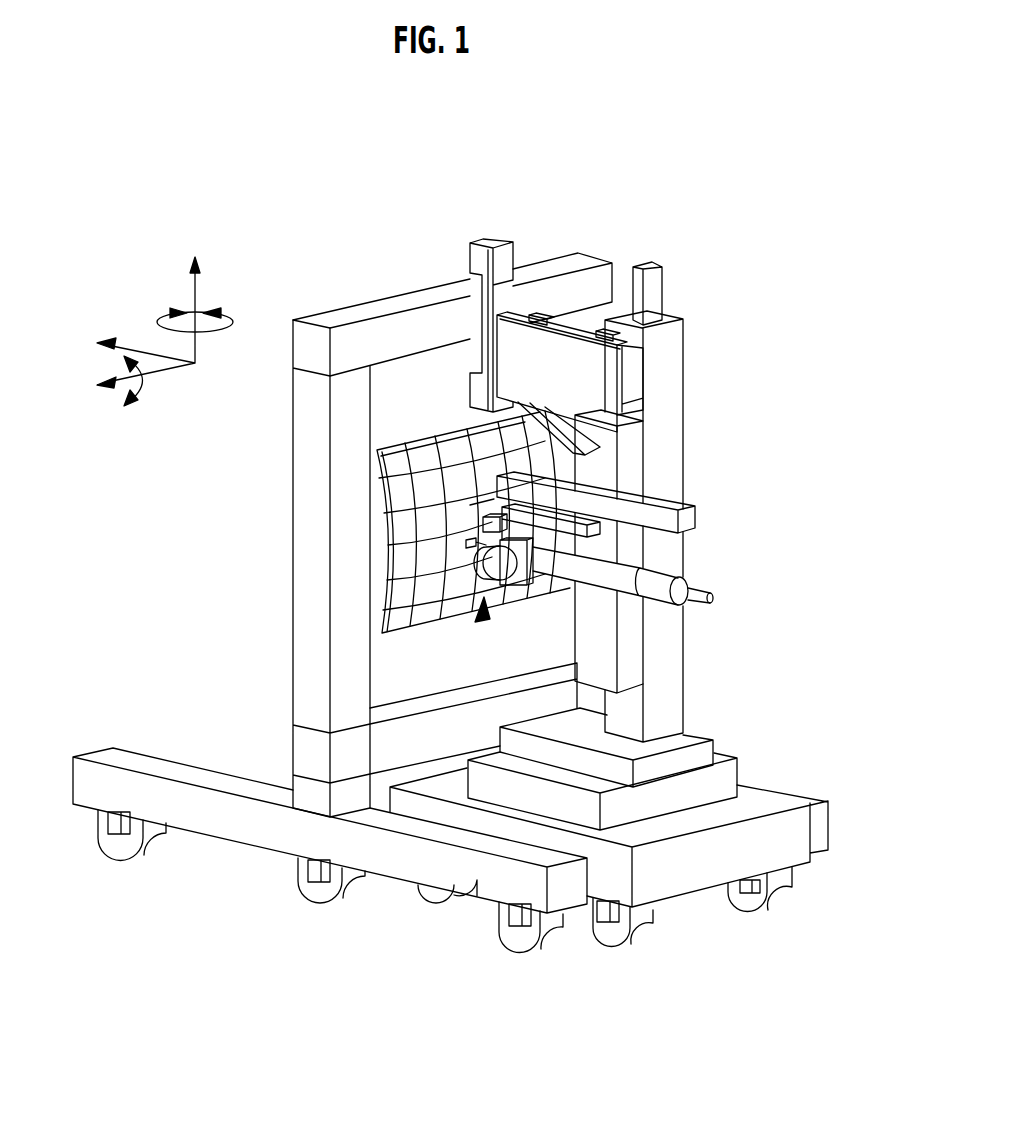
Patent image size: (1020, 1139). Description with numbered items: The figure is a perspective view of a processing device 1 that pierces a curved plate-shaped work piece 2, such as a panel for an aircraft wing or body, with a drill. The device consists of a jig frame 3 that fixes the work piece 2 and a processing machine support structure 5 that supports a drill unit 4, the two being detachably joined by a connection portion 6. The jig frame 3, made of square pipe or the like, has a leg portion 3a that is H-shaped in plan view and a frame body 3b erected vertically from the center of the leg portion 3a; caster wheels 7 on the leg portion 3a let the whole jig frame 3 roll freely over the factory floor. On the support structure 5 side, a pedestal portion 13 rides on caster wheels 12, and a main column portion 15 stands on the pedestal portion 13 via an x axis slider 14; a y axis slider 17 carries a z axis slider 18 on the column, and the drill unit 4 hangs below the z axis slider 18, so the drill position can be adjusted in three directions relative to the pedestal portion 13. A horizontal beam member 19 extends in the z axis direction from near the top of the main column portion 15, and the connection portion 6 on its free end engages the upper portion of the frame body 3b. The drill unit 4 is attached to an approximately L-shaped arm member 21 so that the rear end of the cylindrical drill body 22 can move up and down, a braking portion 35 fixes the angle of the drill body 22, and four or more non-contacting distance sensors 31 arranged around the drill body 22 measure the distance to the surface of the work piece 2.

The processing device 1 is at (380, 188).
The work piece 2 is at (403, 490).
The jig frame 3 is at (255, 676).
The leg portion 3a is at (170, 770).
The frame body 3b is at (307, 697).
The drill unit 4 is at (477, 621).
The processing machine support structure 5 is at (738, 632).
The connection portion 6 is at (500, 253).
The caster wheels 7 is at (123, 848).
The caster wheels 12 is at (778, 900).
The pedestal portion 13 is at (697, 885).
The x axis slider 14 is at (703, 747).
The main column portion 15 is at (663, 360).
The y axis slider 17 is at (636, 450).
The z axis slider 18 is at (652, 494).
The horizontal beam member 19 is at (561, 340).
The arm member 21 is at (532, 582).
The drill body 22 is at (676, 574).
The non-contacting distance sensors 31 is at (488, 513).
The braking portion 35 is at (387, 582).